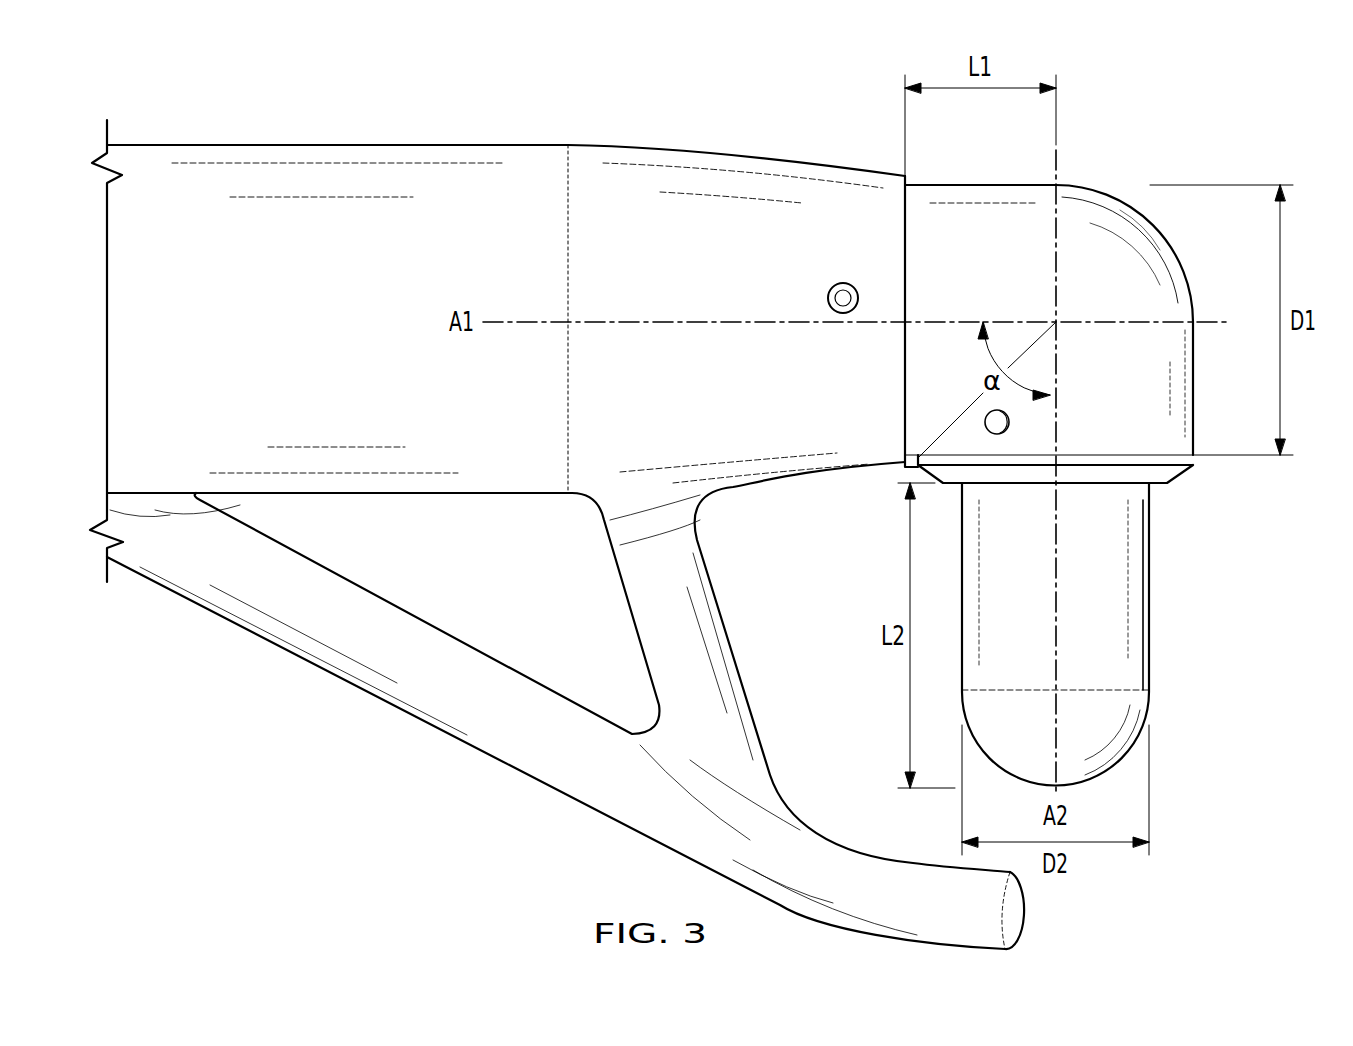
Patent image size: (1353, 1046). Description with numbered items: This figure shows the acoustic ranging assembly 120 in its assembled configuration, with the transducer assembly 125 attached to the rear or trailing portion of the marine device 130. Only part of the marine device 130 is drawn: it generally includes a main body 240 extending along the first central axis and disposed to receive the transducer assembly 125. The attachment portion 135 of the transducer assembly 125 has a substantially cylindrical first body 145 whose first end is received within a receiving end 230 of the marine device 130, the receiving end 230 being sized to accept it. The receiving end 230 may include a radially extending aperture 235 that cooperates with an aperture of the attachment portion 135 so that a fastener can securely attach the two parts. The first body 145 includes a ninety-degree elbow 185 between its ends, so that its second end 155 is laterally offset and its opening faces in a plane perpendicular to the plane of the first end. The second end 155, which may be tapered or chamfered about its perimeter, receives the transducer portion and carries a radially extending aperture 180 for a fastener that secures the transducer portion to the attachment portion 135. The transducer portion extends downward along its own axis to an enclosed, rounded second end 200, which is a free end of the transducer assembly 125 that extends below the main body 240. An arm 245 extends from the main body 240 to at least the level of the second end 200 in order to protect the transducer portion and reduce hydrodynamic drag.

The acoustic ranging assembly 120 is at (413, 104).
The transducer assembly 125 is at (1160, 742).
The marine device 130 is at (267, 144).
The attachment portion 135 is at (1078, 184).
The first body 145 is at (987, 182).
The second end 155 is at (1170, 483).
The radially extending aperture 180 is at (995, 435).
The elbow 185 is at (1173, 252).
The second end 200 is at (1103, 760).
The receiving end 230 is at (907, 256).
The radially extending aperture 235 is at (843, 283).
The main body 240 is at (348, 338).
The arm 245 is at (1030, 912).